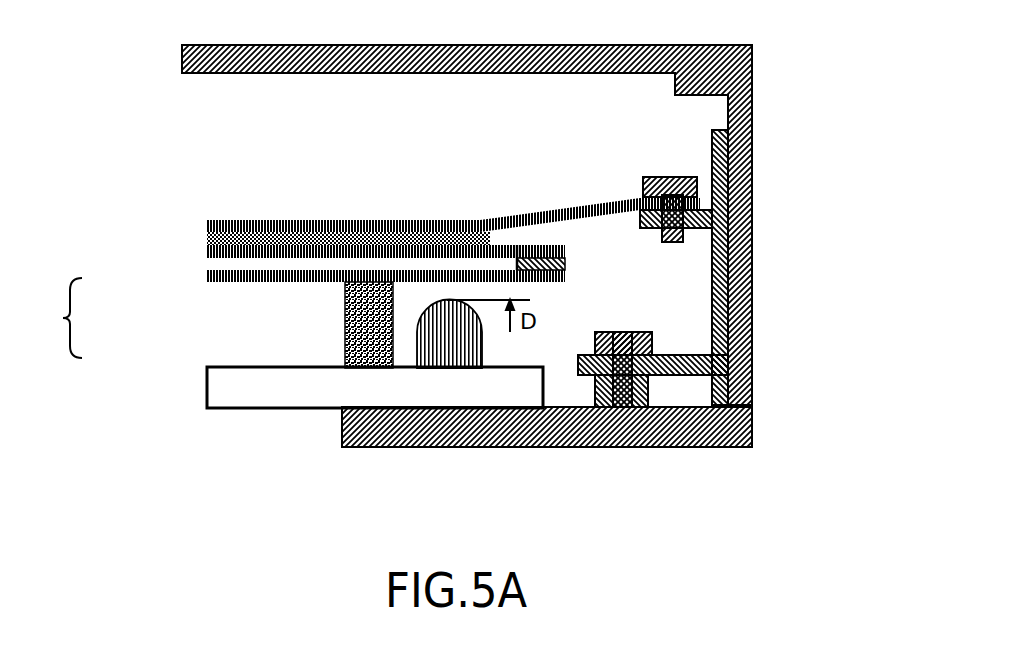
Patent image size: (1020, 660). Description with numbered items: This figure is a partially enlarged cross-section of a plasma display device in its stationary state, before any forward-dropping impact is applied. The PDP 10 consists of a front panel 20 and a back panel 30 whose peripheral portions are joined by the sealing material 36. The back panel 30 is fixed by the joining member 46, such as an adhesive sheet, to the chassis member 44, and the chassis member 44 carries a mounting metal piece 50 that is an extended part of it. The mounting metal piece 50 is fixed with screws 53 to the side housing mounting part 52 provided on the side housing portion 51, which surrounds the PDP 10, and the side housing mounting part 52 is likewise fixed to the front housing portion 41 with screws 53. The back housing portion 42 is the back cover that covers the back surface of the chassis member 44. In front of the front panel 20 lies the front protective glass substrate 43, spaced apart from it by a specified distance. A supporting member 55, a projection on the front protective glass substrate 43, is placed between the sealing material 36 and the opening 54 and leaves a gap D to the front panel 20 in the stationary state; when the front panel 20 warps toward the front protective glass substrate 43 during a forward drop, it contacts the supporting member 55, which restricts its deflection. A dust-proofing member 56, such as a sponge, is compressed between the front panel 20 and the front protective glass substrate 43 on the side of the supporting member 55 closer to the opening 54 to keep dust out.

The PDP 10 is at (63, 318).
The front panel 20 is at (247, 282).
The back panel 30 is at (207, 258).
The sealing material 36 is at (547, 283).
The front housing portion 41 is at (752, 415).
The back housing portion 42 is at (752, 47).
The front protective glass substrate 43 is at (330, 387).
The chassis member 44 is at (270, 222).
The joining member 46 is at (207, 238).
The mounting metal piece 50 is at (580, 220).
The side housing portion 51 is at (752, 195).
The side housing mounting part 52 is at (752, 223).
The screws 53 is at (752, 140).
The opening 54 is at (330, 427).
The supporting member 55 is at (470, 370).
The dust-proofing member 56 is at (365, 337).